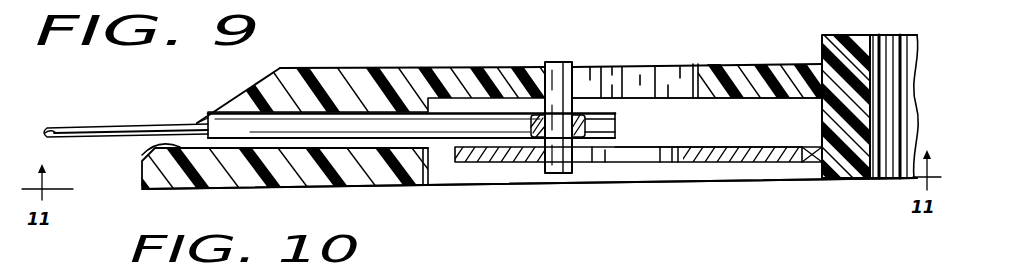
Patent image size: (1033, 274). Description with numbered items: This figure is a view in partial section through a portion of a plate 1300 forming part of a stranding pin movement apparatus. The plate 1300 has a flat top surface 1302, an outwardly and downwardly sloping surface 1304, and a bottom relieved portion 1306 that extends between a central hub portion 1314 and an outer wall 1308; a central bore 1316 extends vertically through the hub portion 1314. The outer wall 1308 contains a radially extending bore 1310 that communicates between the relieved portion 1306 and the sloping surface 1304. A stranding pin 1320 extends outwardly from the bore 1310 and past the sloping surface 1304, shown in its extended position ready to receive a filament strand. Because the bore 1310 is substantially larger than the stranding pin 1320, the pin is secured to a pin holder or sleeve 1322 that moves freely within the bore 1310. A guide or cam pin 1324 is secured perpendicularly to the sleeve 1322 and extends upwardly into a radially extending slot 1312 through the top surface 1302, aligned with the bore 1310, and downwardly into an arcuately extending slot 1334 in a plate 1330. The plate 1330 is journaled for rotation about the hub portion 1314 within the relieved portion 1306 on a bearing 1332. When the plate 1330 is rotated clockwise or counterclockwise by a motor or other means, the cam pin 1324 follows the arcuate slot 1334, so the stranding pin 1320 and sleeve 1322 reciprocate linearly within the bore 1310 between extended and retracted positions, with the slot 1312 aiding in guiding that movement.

The plate 1300 is at (420, 48).
The top surface 1302 is at (513, 66).
The outwardly and downwardly sloping surface 1304 is at (268, 84).
The bottom relieved portion 1306 is at (498, 176).
The outer wall 1308 is at (268, 176).
The radially extending bore 1310 is at (142, 155).
The radially extending slot 1312 is at (661, 72).
The central hub portion 1314 is at (825, 50).
The central bore 1316 is at (893, 43).
The stranding pin 1320 is at (97, 128).
The pin holder or sleeve 1322 is at (228, 124).
The guide or cam pin 1324 is at (560, 62).
The plate 1330 is at (770, 144).
The bearing 1332 is at (820, 165).
The arcuately extending slot 1334 is at (631, 154).